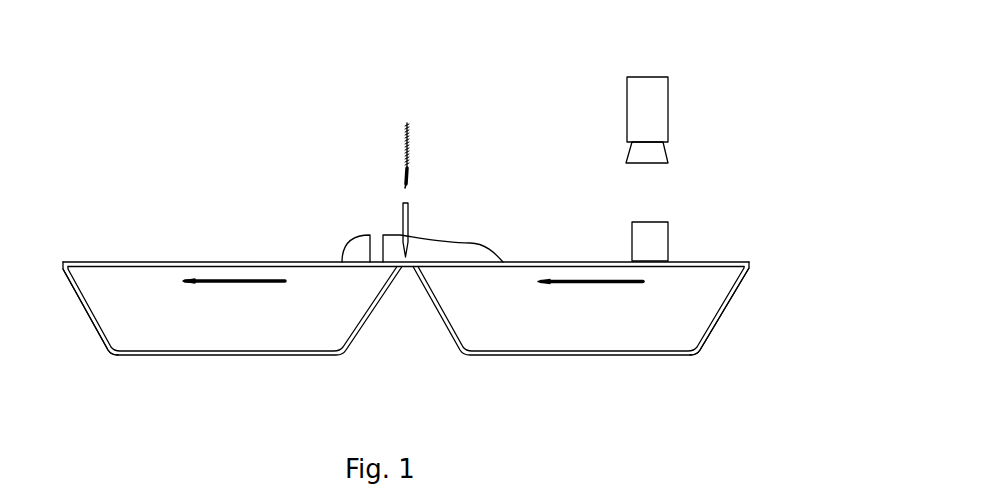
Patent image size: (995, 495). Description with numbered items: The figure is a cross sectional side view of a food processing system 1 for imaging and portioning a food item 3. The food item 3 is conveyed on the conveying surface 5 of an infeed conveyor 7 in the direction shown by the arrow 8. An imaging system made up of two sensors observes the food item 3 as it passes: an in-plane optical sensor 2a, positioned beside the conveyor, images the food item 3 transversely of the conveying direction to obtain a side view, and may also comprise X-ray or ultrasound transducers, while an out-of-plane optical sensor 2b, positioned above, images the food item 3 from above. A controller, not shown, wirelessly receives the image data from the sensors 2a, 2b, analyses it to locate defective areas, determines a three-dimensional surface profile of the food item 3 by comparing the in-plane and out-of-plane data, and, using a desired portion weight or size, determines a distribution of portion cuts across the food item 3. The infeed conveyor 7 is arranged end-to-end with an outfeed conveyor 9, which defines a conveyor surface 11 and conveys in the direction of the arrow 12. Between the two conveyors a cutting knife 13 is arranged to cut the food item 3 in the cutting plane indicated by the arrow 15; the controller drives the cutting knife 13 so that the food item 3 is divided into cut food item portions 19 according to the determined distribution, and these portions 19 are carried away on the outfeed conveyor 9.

The food processing system 1 is at (473, 95).
The in-plane optical sensor 2a is at (668, 225).
The out-of-plane optical sensor 2b is at (642, 75).
The food item 3 is at (488, 252).
The conveying surface 5 is at (710, 261).
The infeed conveyor 7 is at (690, 333).
The arrow 8 is at (560, 282).
The outfeed conveyor 9 is at (123, 338).
The conveyor surface 11 is at (142, 262).
The arrow 12 is at (197, 280).
The cutting knife 13 is at (408, 207).
The arrow 15 is at (407, 123).
The cut food item portions 19 is at (361, 250).